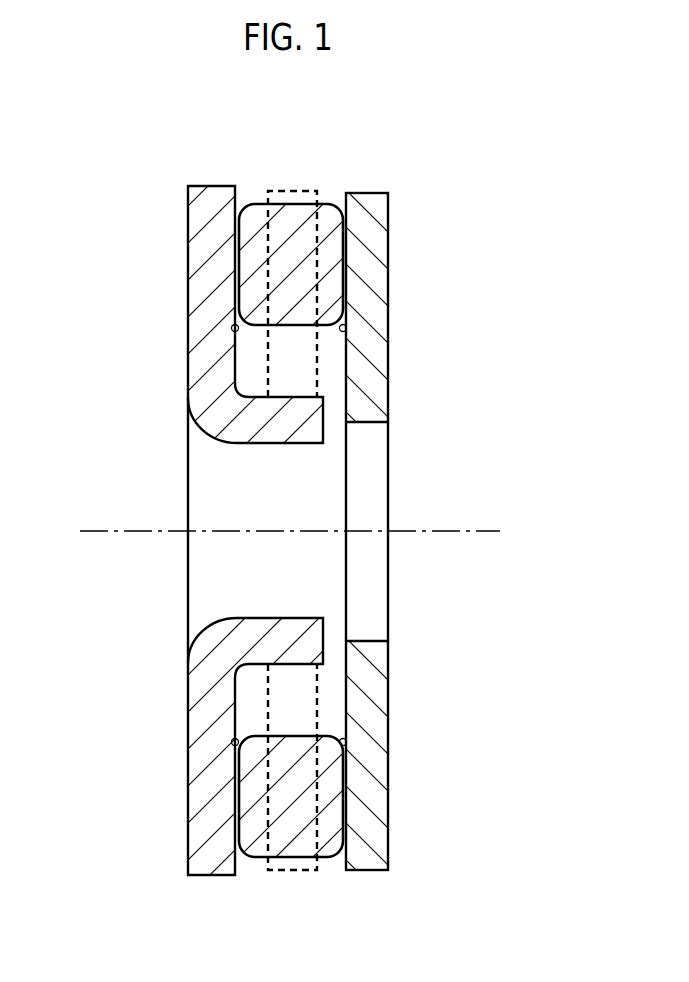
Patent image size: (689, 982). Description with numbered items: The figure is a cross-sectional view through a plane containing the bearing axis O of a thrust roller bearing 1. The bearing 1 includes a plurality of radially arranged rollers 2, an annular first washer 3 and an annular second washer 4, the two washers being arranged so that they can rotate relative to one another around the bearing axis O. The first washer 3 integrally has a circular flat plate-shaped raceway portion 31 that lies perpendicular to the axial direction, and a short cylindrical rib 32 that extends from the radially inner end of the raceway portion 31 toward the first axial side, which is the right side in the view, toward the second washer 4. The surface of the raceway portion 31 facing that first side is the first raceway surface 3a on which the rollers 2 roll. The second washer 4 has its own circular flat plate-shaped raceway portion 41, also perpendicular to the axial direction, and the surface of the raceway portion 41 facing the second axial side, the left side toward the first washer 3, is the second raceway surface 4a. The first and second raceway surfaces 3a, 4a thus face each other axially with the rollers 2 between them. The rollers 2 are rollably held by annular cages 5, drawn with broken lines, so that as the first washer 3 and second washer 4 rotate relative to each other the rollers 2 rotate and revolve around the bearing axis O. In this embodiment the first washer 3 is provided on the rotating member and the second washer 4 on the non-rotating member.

The thrust roller bearing 1 is at (138, 147).
The rollers 2 is at (293, 220).
The first washer 3 is at (289, 487).
The raceway portion 31 is at (198, 267).
The rib 32 is at (262, 430).
The first raceway surface 3a is at (232, 330).
The second washer 4 is at (371, 489).
The raceway portion 41 is at (385, 268).
The second raceway surface 4a is at (346, 330).
The cages 5 is at (270, 188).
The bearing axis O is at (468, 532).